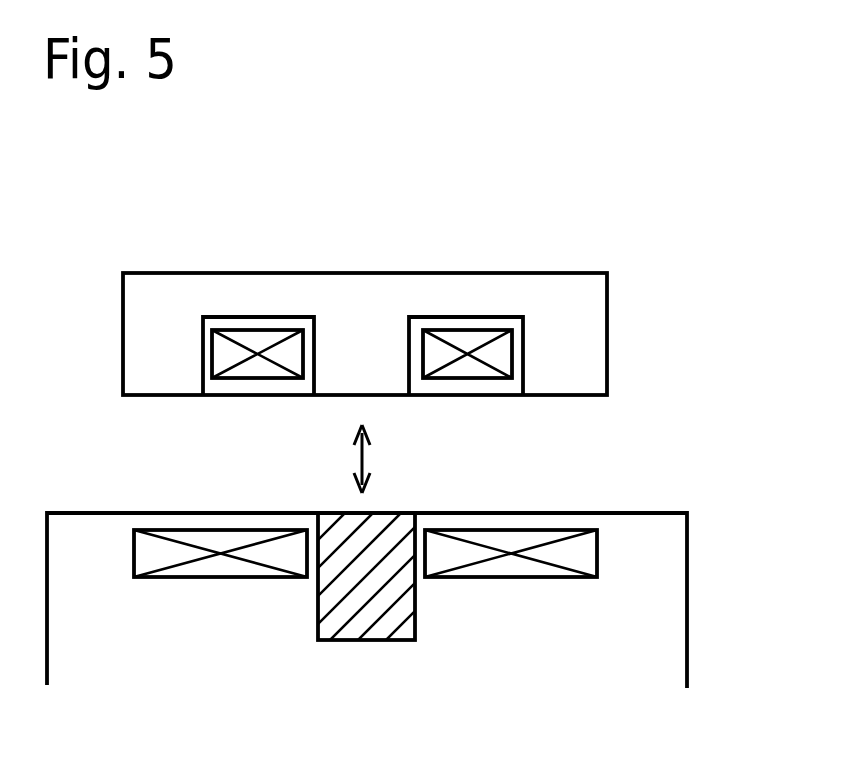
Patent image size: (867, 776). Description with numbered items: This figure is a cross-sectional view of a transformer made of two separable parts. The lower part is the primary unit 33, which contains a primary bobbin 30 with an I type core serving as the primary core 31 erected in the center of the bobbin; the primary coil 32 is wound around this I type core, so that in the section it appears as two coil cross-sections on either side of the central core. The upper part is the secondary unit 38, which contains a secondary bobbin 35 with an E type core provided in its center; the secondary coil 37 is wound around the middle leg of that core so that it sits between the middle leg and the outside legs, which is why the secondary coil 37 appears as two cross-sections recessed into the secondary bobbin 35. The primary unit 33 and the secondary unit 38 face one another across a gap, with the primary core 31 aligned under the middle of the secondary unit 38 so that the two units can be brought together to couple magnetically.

The primary bobbin 30 is at (670, 583).
The primary core 31 is at (365, 632).
The primary coil 32 is at (213, 568).
The primary unit 33 is at (796, 512).
The secondary bobbin 35 is at (128, 305).
The secondary coil 37 is at (503, 350).
The secondary unit 38 is at (720, 267).